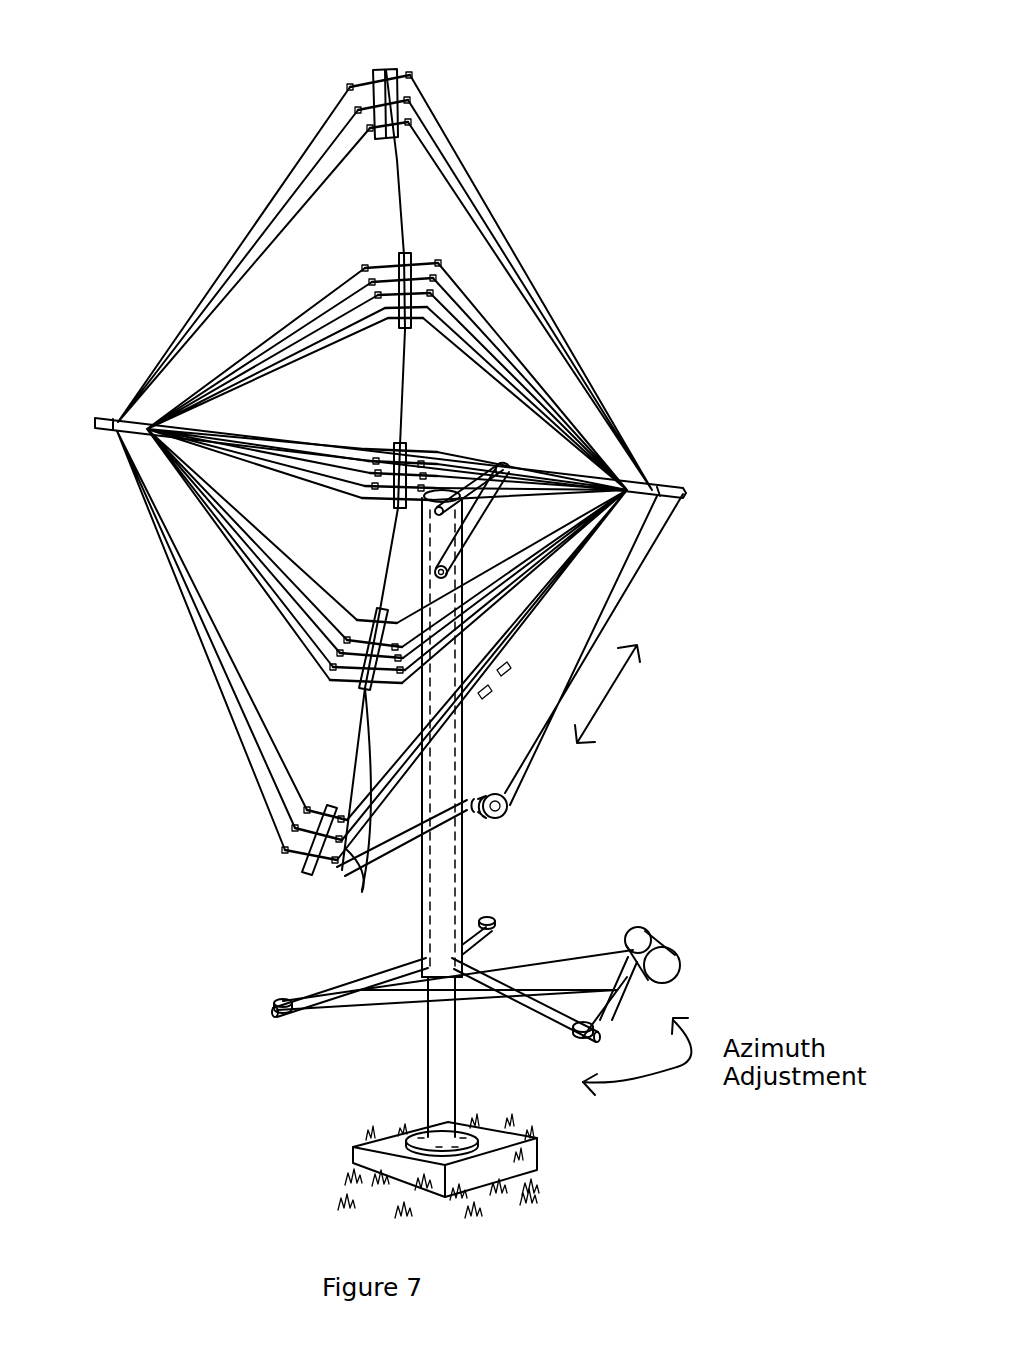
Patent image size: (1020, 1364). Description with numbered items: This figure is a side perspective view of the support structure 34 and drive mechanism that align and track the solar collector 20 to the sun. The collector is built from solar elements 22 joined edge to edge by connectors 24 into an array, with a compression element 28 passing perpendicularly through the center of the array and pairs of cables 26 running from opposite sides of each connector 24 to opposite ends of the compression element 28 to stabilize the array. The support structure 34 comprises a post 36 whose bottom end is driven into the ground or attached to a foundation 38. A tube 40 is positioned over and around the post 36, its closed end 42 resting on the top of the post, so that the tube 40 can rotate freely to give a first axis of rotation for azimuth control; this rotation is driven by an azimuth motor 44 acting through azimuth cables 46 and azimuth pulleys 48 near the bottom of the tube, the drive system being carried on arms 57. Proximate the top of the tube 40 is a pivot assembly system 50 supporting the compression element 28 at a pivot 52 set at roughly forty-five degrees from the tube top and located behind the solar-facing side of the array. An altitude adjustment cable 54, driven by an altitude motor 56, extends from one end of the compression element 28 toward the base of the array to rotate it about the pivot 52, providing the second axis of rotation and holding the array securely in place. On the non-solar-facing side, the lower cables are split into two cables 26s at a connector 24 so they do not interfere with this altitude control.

The solar collector 20 is at (445, 82).
The solar elements 22 is at (400, 213).
The connectors 24 is at (407, 110).
The cables 26 is at (497, 337).
The split cables 26s is at (360, 808).
The compression element 28 is at (102, 422).
The support structure 34 is at (308, 1125).
The post 36 is at (437, 1074).
The foundation 38 is at (503, 1142).
The tube 40 is at (462, 856).
The closed end 42 is at (428, 500).
The azimuth motor 44 is at (643, 945).
The azimuth cables 46 is at (373, 963).
The azimuth pulleys 48 is at (493, 918).
The pivot assembly system 50 is at (497, 512).
The pivot 52 is at (507, 462).
The altitude adjustment cable 54 is at (527, 763).
The altitude motor 56 is at (510, 797).
The arms 57 is at (463, 1045).